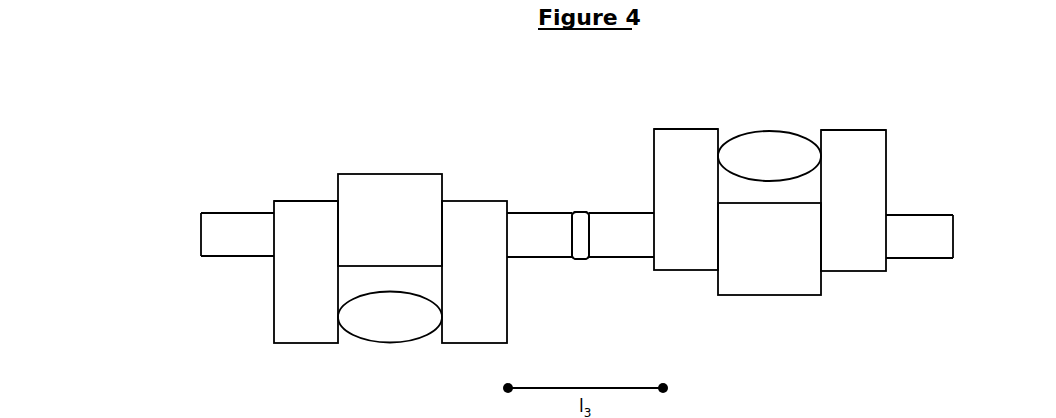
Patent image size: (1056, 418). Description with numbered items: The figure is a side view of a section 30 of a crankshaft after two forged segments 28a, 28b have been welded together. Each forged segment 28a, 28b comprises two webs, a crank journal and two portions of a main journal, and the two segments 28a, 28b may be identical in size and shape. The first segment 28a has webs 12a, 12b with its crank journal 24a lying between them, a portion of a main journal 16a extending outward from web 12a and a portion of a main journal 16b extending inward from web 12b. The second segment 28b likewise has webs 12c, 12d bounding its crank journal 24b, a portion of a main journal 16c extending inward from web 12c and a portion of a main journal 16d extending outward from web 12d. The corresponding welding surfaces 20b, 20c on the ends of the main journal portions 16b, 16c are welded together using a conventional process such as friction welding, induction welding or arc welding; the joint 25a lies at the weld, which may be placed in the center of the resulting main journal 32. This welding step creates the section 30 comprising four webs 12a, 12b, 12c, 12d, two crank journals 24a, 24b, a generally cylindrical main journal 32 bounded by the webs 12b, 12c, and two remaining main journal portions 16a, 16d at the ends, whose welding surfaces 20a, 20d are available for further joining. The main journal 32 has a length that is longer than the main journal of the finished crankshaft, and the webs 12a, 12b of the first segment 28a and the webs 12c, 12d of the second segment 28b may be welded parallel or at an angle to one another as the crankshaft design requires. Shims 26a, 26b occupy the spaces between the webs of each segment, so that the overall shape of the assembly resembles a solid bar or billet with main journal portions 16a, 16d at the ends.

The web 12a is at (274, 298).
The web 12b is at (505, 297).
The web 12c is at (687, 270).
The web 12d is at (853, 272).
The portion of a main journal 16a is at (227, 257).
The portion of a main journal 16b is at (545, 258).
The portion of a main journal 16c is at (616, 258).
The portion of a main journal 16d is at (925, 216).
The welding surface 20a is at (201, 229).
The welding surface 20b is at (570, 230).
The welding surface 20c is at (592, 228).
The welding surface 20d is at (953, 240).
The crank journal 24a is at (383, 342).
The crank journal 24b is at (768, 132).
The coupling 25a is at (584, 262).
The shim 26a is at (385, 174).
The shim 26b is at (765, 297).
The forged segment 28a is at (275, 179).
The forged segment 28b is at (908, 145).
The section 30 is at (668, 100).
The main journal 32 is at (570, 202).